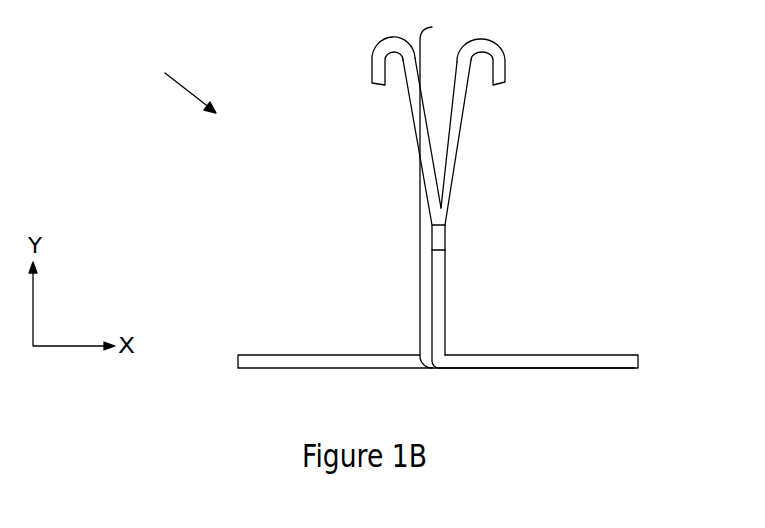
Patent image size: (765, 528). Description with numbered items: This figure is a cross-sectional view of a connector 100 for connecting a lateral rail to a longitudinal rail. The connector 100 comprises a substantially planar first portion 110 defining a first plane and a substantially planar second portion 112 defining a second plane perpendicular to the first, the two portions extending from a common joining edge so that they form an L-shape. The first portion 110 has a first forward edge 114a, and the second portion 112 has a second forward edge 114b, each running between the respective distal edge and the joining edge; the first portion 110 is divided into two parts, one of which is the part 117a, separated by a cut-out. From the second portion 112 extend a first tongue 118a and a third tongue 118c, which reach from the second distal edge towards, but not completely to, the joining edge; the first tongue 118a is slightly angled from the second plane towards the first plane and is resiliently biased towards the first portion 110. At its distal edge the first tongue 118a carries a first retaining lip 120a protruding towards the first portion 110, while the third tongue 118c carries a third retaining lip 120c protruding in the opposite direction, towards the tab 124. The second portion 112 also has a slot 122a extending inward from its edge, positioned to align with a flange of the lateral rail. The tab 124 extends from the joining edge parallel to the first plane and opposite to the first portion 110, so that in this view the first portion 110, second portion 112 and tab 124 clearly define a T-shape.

The connector 100 is at (167, 84).
The first portion 110 is at (470, 351).
The second portion 112 is at (436, 293).
The first forward edge 114a is at (640, 375).
The second forward edge 114b is at (420, 266).
The part of the first portion 117a is at (585, 355).
The first tongue 118a is at (461, 130).
The third tongue 118c is at (416, 133).
The first retaining lip 120a is at (497, 73).
The third retaining lip 120c is at (380, 72).
The slot 122a is at (436, 238).
The tab 124 is at (265, 357).